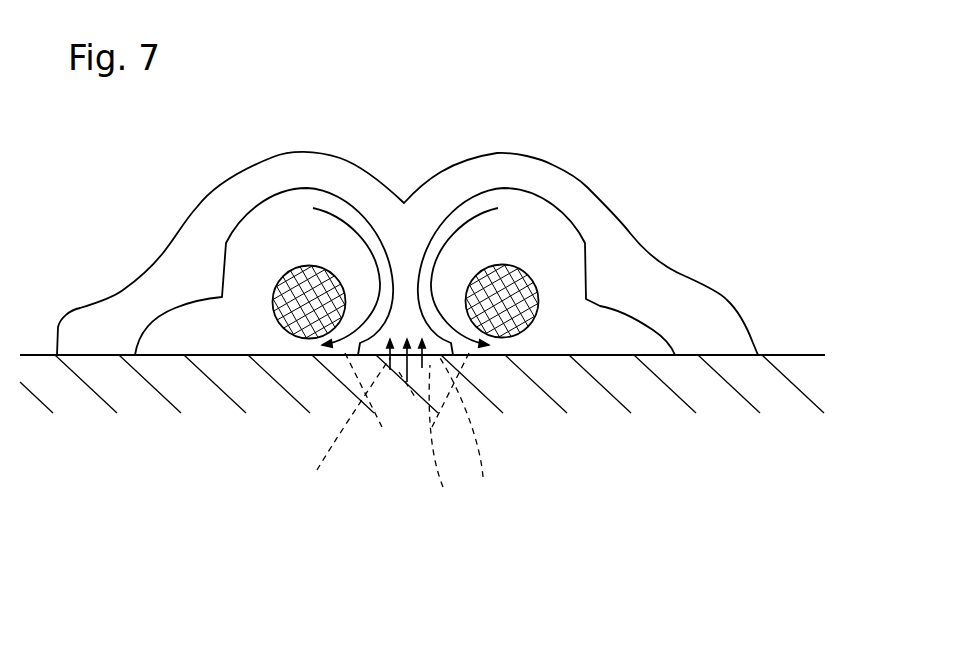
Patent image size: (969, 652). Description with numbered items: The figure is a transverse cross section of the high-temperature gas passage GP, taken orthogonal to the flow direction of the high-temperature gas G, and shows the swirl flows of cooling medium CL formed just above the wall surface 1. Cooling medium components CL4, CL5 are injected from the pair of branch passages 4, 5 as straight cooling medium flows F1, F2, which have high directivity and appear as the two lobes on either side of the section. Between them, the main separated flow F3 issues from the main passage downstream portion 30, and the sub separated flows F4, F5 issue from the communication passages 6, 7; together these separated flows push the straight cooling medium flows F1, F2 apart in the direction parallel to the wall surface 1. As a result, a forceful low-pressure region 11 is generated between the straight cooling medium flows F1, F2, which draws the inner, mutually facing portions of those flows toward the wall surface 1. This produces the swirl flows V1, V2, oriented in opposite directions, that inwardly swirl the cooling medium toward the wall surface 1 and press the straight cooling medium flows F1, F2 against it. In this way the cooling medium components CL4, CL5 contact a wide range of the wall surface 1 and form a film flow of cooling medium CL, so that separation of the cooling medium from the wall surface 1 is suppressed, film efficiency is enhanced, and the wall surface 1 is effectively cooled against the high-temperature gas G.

The wall surface 1 is at (790, 355).
The low-pressure region 11 is at (416, 327).
The branch passage 4 is at (462, 431).
The branch passage 5 is at (343, 431).
The main passage downstream portion 30 is at (448, 449).
The communication passage 6 is at (436, 469).
The communication passage 7 is at (408, 386).
The cooling medium CL is at (585, 158).
The cooling medium component CL4 is at (533, 325).
The cooling medium component CL5 is at (281, 326).
The high-temperature gas G is at (110, 209).
The high-temperature gas passage GP is at (775, 192).
The straight cooling medium flow F1 is at (525, 389).
The straight cooling medium flow F2 is at (265, 392).
The main separated flow F3 is at (407, 380).
The sub separated flow F4 is at (422, 368).
The sub separated flow F5 is at (390, 361).
The swirl flow V1 is at (473, 212).
The swirl flow V2 is at (342, 213).